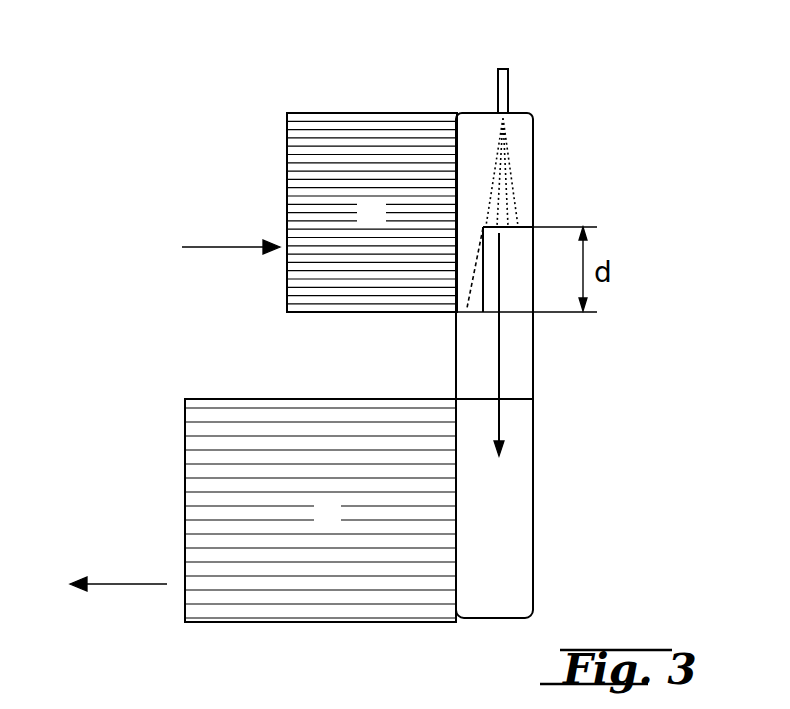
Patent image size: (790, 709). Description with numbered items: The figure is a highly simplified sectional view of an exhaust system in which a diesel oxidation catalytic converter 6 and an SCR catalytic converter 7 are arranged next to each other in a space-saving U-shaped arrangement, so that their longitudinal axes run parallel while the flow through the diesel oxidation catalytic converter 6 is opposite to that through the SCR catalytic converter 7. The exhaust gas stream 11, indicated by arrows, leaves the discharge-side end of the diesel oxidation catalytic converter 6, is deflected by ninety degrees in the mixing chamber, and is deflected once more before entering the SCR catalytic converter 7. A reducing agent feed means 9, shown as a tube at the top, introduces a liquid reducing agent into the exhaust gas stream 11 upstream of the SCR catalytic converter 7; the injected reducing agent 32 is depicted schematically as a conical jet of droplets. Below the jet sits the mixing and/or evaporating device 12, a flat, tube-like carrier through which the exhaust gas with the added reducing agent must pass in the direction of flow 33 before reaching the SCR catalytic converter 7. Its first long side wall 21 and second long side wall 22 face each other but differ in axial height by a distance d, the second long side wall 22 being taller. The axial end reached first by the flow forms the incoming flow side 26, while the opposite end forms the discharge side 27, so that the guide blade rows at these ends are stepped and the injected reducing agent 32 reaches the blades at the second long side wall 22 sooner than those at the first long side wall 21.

The diesel oxidation catalytic converter 6 is at (380, 226).
The SCR catalytic converter 7 is at (335, 529).
The reducing agent feed means 9 is at (510, 82).
The exhaust gas stream 11 is at (154, 408).
The mixing and/or evaporating device 12 is at (456, 343).
The first long side wall 21 is at (445, 385).
The second long side wall 22 is at (535, 362).
The incoming flow side 26 is at (519, 226).
The discharge side 27 is at (513, 402).
The injected reducing agent 32 is at (493, 160).
The direction of flow 33 is at (500, 366).